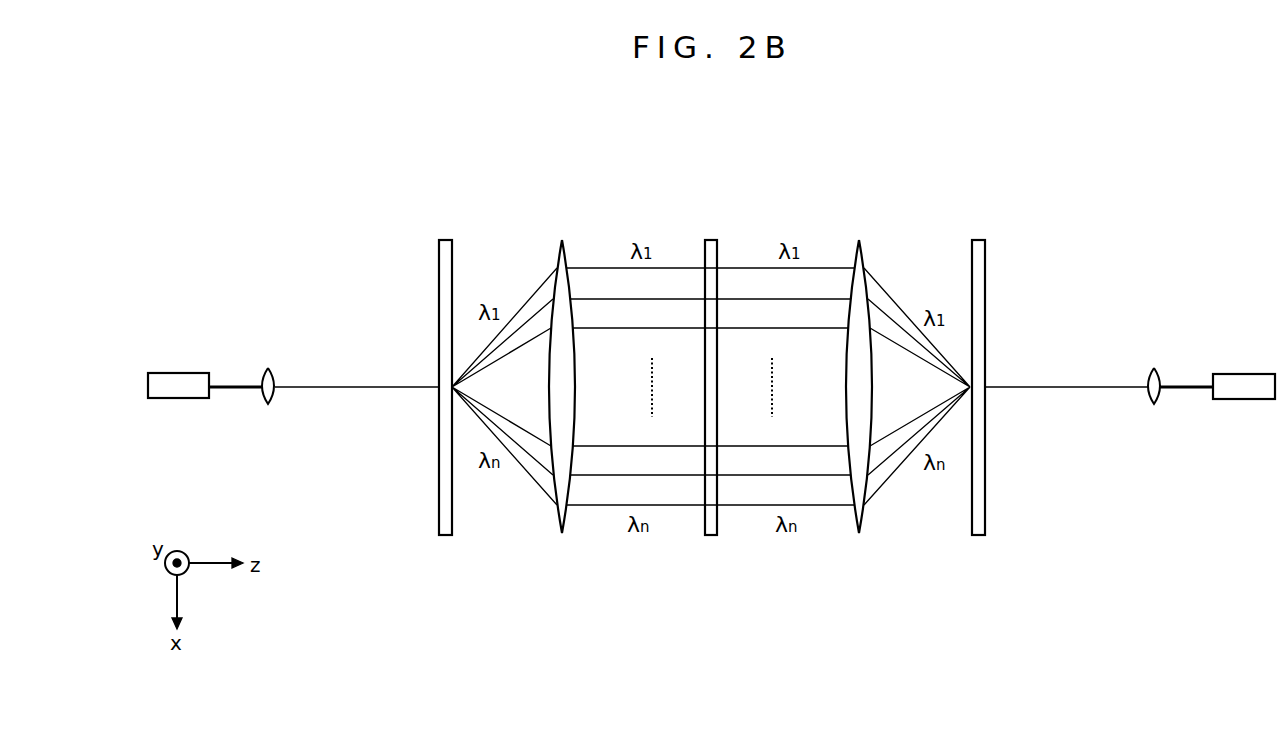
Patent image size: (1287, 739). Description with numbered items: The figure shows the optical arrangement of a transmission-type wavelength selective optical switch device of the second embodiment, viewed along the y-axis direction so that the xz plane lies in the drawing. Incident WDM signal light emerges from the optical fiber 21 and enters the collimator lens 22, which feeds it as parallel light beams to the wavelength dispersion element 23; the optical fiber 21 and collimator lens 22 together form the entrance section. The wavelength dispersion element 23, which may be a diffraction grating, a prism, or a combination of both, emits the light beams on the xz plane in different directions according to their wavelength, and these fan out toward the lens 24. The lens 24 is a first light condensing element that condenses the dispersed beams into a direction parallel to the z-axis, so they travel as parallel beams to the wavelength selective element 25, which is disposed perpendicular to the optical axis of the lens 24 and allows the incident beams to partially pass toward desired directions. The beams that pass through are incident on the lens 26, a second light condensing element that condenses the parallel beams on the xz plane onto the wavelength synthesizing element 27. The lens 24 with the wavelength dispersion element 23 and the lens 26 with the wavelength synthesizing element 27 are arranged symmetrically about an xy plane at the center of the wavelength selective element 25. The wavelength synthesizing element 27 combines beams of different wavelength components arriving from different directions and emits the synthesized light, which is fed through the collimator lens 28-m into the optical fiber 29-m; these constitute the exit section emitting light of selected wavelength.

The optical fiber 21 is at (172, 374).
The collimator lens 22 is at (260, 380).
The wavelength dispersion element 23 is at (453, 250).
The lens 24 is at (566, 250).
The wavelength selective element 25 is at (718, 250).
The lens 26 is at (864, 250).
The wavelength synthesizing element 27 is at (985, 250).
The collimator lens 28-m is at (1148, 381).
The optical fiber 29-m is at (1238, 374).